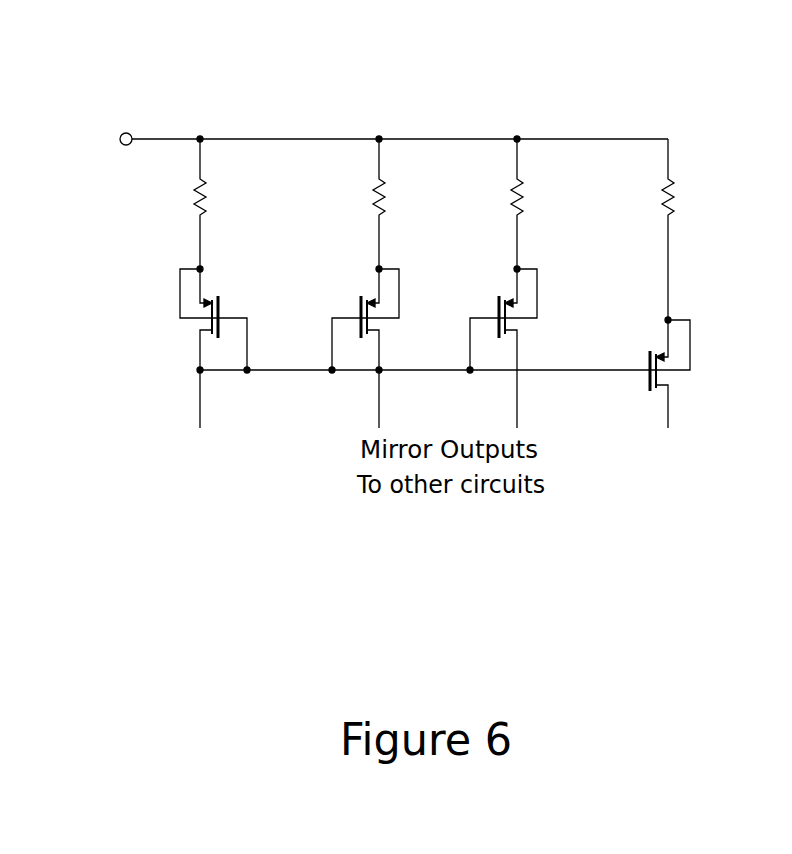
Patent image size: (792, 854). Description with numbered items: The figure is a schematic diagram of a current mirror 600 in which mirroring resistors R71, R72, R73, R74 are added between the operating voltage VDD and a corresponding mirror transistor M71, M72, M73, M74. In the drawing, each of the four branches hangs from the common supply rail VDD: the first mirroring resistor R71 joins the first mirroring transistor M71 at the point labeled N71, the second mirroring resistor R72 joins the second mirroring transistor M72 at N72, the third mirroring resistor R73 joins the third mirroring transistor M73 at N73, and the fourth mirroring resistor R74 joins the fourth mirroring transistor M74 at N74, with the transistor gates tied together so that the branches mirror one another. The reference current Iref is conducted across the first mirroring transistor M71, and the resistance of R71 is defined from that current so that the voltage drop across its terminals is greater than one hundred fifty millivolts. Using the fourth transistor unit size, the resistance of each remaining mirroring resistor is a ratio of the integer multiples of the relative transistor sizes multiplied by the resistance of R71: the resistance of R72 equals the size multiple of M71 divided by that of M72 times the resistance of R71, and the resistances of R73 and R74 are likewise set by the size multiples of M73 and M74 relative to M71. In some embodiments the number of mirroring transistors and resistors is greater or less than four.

The current mirror 600 is at (723, 83).
The operating voltage VDD is at (359, 142).
The first mirroring resistor R71 is at (227, 204).
The second mirroring resistor R72 is at (353, 204).
The third mirroring resistor R73 is at (491, 204).
The fourth mirroring resistor R74 is at (643, 229).
The node N71 is at (176, 252).
The node N72 is at (353, 252).
The node N73 is at (491, 252).
The node N74 is at (642, 291).
The first mirroring transistor M71 is at (226, 348).
The second mirroring transistor M72 is at (353, 348).
The third mirroring transistor M73 is at (491, 348).
The fourth mirroring transistor M74 is at (641, 374).
The reference current Iref is at (180, 343).